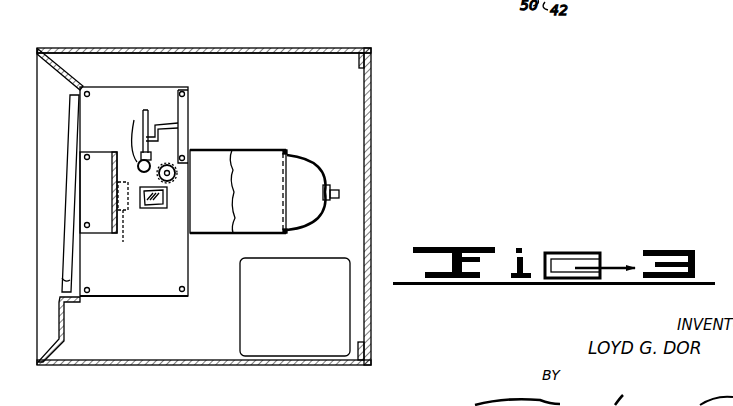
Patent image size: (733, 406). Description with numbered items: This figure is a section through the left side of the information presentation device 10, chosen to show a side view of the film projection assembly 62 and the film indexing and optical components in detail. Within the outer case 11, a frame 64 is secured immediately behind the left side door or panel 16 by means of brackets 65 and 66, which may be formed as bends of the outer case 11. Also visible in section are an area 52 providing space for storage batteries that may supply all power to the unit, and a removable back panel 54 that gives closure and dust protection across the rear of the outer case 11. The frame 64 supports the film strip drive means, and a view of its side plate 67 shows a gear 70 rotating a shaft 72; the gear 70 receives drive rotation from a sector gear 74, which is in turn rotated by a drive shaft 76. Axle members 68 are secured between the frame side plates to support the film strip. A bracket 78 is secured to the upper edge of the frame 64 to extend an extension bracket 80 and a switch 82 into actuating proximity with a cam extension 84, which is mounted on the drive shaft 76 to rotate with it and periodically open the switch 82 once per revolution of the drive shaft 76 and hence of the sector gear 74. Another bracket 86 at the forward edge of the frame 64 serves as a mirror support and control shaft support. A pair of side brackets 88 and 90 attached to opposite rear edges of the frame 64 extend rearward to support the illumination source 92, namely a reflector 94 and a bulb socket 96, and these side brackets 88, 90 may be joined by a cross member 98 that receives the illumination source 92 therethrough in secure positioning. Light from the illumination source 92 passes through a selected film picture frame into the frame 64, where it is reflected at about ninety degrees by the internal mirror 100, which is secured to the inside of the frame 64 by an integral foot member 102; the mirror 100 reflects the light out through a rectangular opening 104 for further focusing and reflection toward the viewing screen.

The information presentation device 10 is at (231, 46).
The outer case 11 is at (146, 47).
The left side door or panel 16 is at (64, 212).
The area 52 is at (285, 310).
The removable back panel 54 is at (372, 166).
The film projection assembly 62 is at (206, 112).
The frame 64 is at (129, 281).
The bracket 65 is at (66, 73).
The bracket 66 is at (65, 342).
The side plate 67 is at (135, 297).
The axle members 68 is at (185, 94).
The gear 70 is at (176, 177).
The shaft 72 is at (182, 158).
The sector gear 74 is at (140, 158).
The drive shaft 76 is at (140, 172).
The bracket 78 is at (189, 128).
The extension bracket 80 is at (171, 122).
The switch 82 is at (146, 112).
The cam extension 84 is at (136, 135).
The bracket 86 is at (90, 180).
The side bracket 88 is at (216, 152).
The side bracket 90 is at (258, 153).
The illumination source 92 is at (307, 162).
The reflector 94 is at (321, 172).
The bulb socket 96 is at (330, 202).
The cross member 98 is at (290, 234).
The internal mirror 100 is at (143, 210).
The foot member 102 is at (121, 240).
The rectangular opening 104 is at (188, 214).